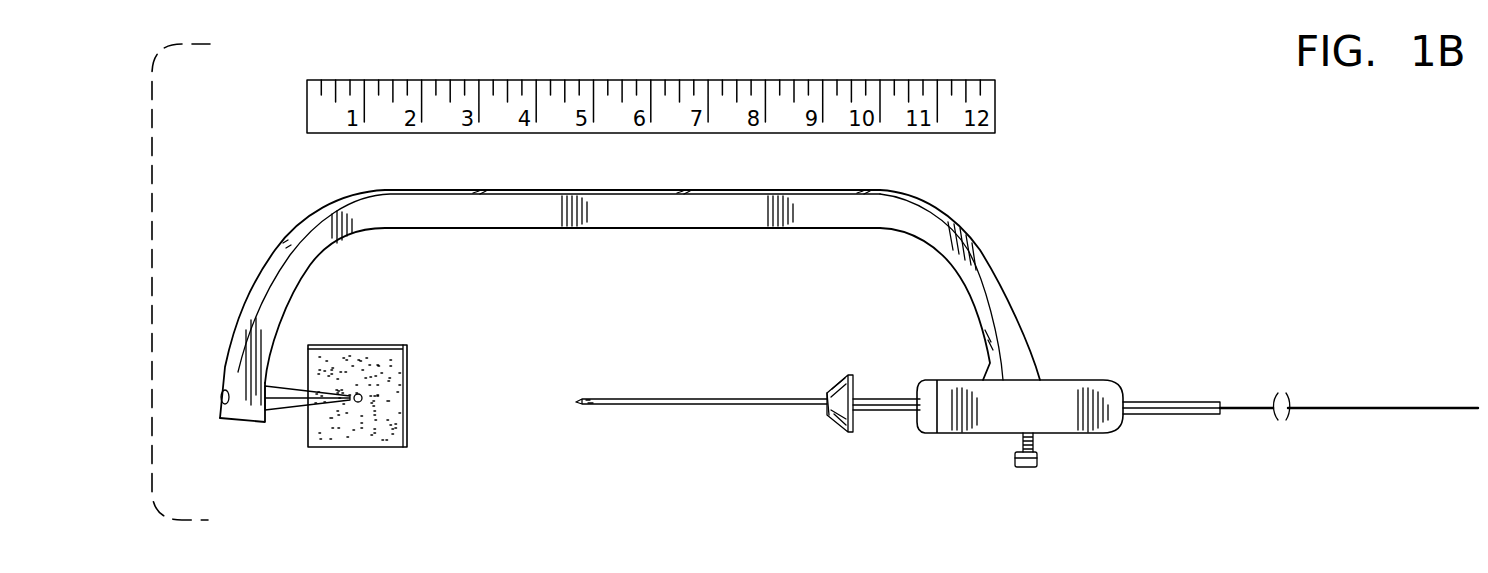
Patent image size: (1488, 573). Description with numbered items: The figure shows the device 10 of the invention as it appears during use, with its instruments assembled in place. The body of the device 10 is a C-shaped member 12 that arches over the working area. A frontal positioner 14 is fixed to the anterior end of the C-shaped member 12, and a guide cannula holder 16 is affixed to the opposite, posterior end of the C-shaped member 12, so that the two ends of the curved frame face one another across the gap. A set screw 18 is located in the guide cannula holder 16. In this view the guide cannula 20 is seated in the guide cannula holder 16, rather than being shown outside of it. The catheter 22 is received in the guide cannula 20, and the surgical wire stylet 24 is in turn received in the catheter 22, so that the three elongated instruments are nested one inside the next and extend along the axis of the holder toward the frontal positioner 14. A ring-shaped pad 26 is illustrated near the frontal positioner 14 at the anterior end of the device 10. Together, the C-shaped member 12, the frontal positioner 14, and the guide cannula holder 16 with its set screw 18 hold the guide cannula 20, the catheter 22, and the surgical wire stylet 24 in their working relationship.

The device 10 is at (275, 252).
The C-shaped member 12 is at (995, 252).
The frontal positioner 14 is at (292, 406).
The guide cannula holder 16 is at (1117, 418).
The set screw 18 is at (1013, 455).
The guide cannula 20 is at (890, 398).
The catheter 22 is at (698, 398).
The surgical wire stylet 24 is at (1262, 407).
The ring-shaped pad 26 is at (408, 367).